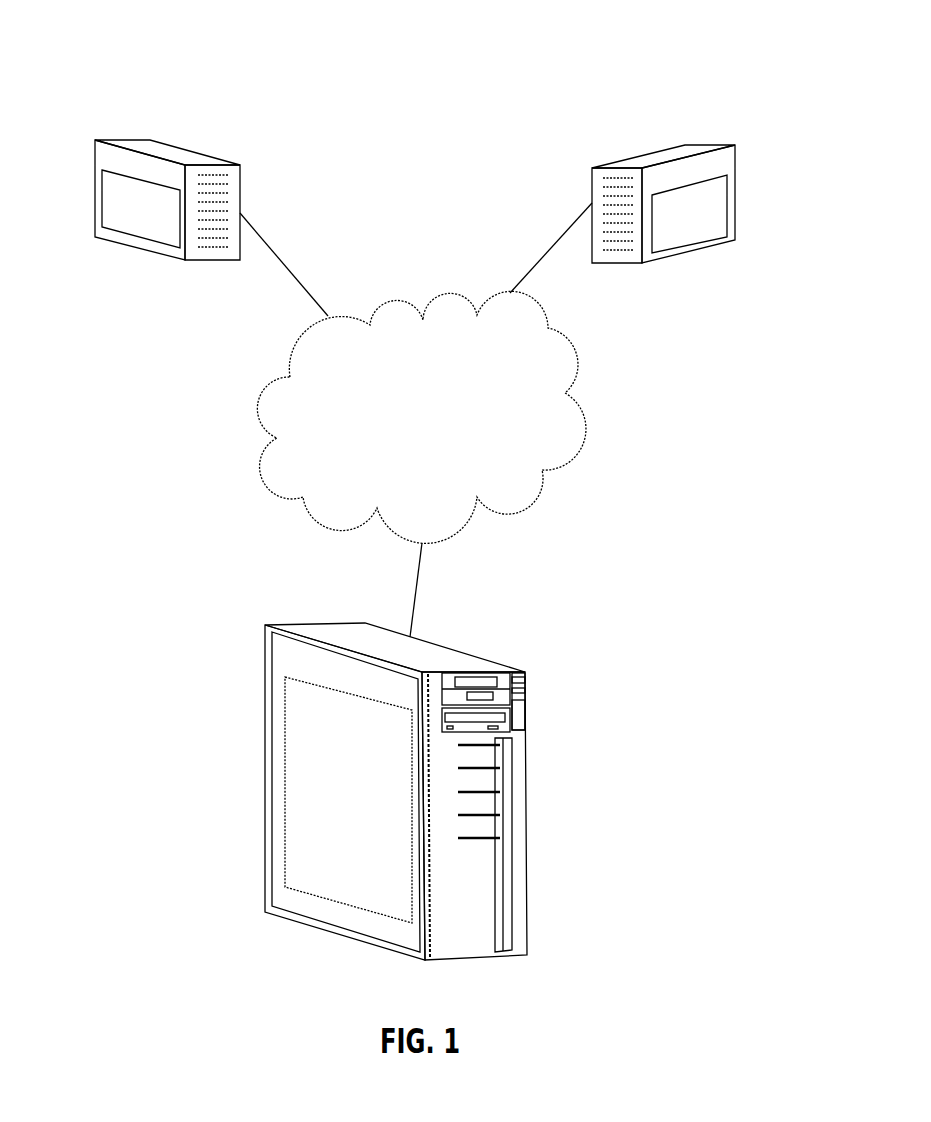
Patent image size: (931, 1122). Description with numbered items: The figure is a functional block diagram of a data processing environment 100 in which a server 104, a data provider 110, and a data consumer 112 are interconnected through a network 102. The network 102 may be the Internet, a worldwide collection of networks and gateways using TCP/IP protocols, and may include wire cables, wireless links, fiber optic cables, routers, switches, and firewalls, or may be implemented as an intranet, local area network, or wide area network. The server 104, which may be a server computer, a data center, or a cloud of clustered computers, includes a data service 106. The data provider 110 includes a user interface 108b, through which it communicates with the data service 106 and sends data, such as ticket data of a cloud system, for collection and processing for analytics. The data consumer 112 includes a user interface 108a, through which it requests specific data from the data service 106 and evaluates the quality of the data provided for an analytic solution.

The data processing environment 100 is at (453, 35).
The network 102 is at (441, 443).
The server 104 is at (425, 791).
The data service 106 is at (283, 733).
The user interface 108a is at (140, 237).
The user interface 108b is at (707, 240).
The data provider 110 is at (663, 189).
The data consumer 112 is at (195, 197).